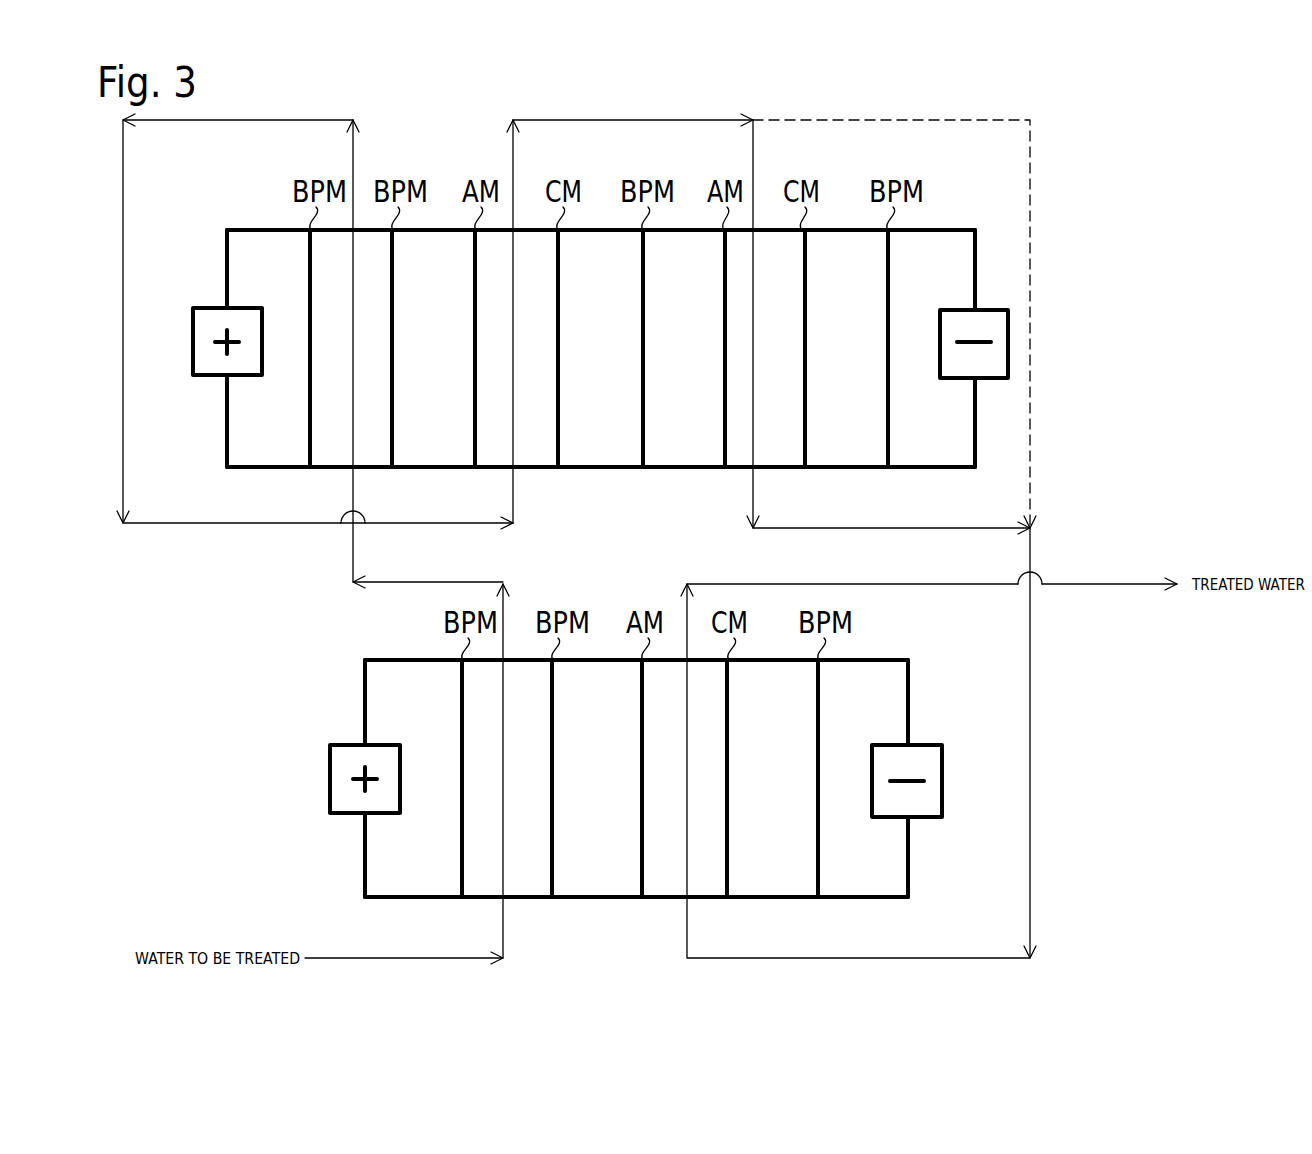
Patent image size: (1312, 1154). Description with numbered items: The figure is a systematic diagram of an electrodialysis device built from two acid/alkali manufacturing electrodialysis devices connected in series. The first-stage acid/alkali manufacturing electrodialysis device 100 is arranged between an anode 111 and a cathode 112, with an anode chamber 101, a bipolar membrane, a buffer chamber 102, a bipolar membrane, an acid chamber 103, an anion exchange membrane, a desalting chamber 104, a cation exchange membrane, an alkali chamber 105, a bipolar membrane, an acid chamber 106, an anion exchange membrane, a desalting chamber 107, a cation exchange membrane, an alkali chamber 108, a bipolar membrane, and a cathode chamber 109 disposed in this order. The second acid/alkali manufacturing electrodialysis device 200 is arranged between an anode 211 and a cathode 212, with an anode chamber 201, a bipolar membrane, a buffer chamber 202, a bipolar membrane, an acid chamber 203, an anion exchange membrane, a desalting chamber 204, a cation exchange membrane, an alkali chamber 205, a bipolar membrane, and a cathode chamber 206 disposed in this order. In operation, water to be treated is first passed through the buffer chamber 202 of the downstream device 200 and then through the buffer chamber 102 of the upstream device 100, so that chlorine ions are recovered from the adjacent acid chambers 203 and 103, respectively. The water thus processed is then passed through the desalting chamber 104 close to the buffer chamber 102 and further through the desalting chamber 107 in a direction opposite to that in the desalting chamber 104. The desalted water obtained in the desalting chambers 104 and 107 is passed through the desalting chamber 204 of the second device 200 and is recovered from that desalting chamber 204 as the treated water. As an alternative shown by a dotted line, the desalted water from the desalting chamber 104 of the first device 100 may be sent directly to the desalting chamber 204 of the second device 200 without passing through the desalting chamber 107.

The acid/alkali manufacturing electrodialysis device 100 is at (1058, 236).
The anode chamber 101 is at (268, 348).
The buffer chamber 102 is at (351, 348).
The acid chamber 103 is at (433, 348).
The desalting chamber 104 is at (516, 348).
The alkali chamber 105 is at (600, 348).
The acid chamber 106 is at (684, 348).
The desalting chamber 107 is at (765, 348).
The alkali chamber 108 is at (846, 348).
The cathode chamber 109 is at (931, 348).
The anode 111 is at (197, 378).
The cathode 112 is at (998, 310).
The second acid/alkali manufacturing electrodialysis device 200 is at (1060, 750).
The anode chamber 201 is at (413, 778).
The buffer chamber 202 is at (507, 778).
The acid chamber 203 is at (597, 778).
The desalting chamber 204 is at (684, 778).
The alkali chamber 205 is at (772, 778).
The cathode chamber 206 is at (863, 778).
The anode 211 is at (330, 777).
The cathode 212 is at (943, 777).